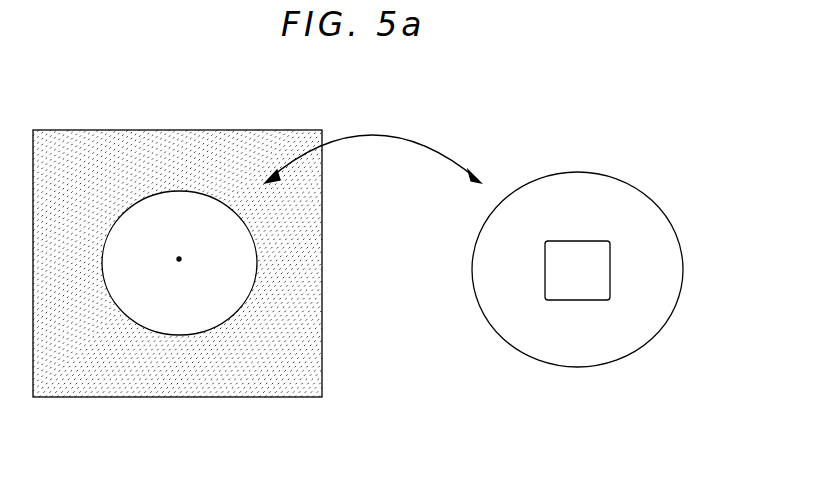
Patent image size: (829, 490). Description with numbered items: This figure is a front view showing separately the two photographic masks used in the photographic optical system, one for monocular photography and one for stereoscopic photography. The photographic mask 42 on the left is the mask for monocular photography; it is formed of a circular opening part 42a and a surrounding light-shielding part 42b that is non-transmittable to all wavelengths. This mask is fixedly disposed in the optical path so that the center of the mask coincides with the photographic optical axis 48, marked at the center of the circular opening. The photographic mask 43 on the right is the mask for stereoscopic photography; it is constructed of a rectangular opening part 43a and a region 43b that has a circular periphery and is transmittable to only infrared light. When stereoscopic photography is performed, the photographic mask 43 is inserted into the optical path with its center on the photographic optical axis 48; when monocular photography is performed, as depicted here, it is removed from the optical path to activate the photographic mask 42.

The photographic mask 42 is at (137, 129).
The circular opening part 42a is at (217, 270).
The light-shielding part 42b is at (276, 206).
The photographic optical axis 48 is at (179, 261).
The photographic mask 43 is at (572, 173).
The rectangular opening part 43a is at (587, 255).
The region 43b is at (573, 337).